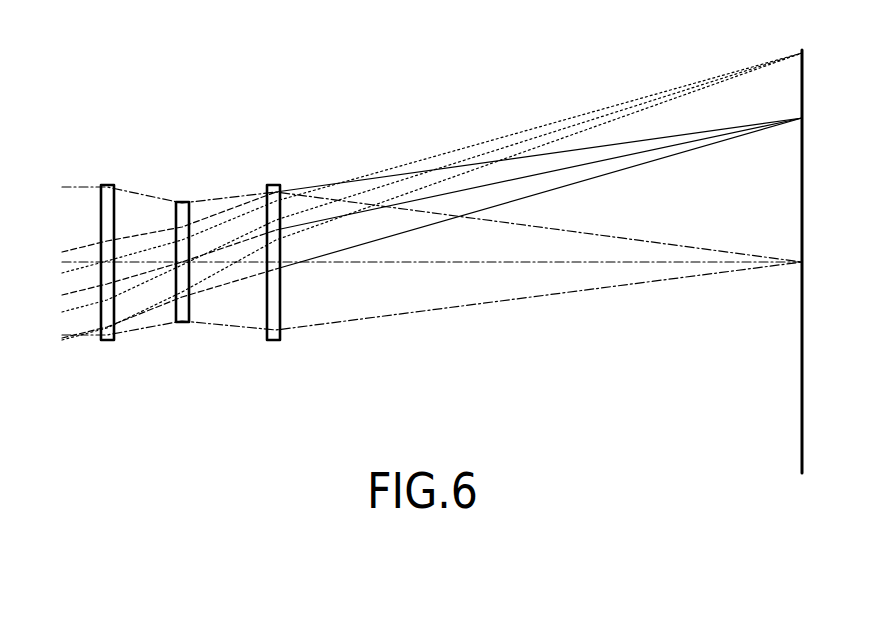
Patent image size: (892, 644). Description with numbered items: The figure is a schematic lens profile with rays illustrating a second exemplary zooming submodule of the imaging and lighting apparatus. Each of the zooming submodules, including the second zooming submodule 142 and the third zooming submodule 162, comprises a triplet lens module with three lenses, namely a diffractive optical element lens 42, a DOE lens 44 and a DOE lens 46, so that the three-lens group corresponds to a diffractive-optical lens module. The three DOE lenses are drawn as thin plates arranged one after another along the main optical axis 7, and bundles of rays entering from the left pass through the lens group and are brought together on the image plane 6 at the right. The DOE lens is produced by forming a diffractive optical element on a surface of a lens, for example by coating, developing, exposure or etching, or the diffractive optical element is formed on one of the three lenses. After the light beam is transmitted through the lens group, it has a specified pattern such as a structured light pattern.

The image plane 6 is at (802, 410).
The main optical axis 7 is at (545, 262).
The diffractive optical element lens 42 is at (107, 185).
The DOE lens 44 is at (183, 202).
The DOE lens 46 is at (278, 313).
The second zooming submodule 142 is at (182, 230).
The third zooming submodule 162 is at (182, 230).